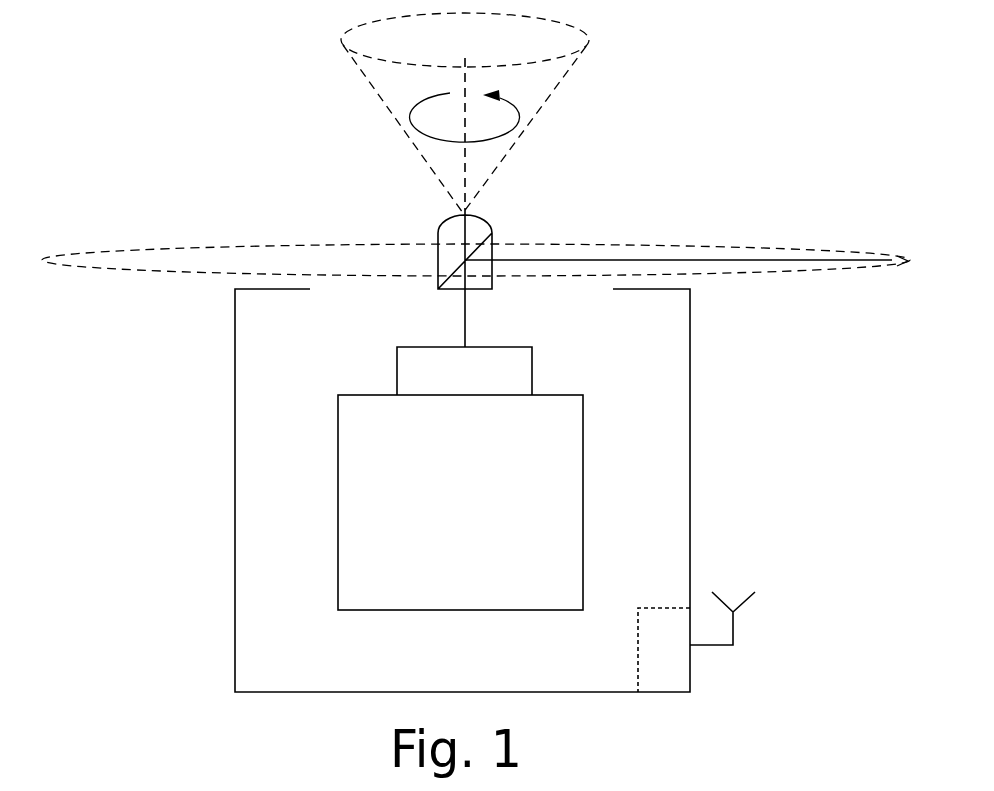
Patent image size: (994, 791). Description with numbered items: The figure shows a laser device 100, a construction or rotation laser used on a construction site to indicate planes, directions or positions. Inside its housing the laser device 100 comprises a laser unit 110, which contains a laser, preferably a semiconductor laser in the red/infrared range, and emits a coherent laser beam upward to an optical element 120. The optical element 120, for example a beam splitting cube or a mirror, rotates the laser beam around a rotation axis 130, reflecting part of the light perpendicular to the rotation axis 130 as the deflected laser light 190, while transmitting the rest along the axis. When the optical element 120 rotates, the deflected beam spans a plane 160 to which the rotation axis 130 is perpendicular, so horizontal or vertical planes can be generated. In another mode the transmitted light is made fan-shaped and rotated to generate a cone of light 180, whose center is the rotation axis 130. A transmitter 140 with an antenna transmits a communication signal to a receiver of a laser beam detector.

The laser device 100 is at (234, 455).
The laser unit 110 is at (451, 499).
The optical element 120 is at (433, 262).
The rotation axis 130 is at (470, 203).
The transmitter 140 is at (684, 665).
The plane spanned by the laser beam 160 is at (668, 245).
The cone of light 180 is at (566, 90).
The laser light deflected perpendicular to the rotation axis 190 is at (788, 258).